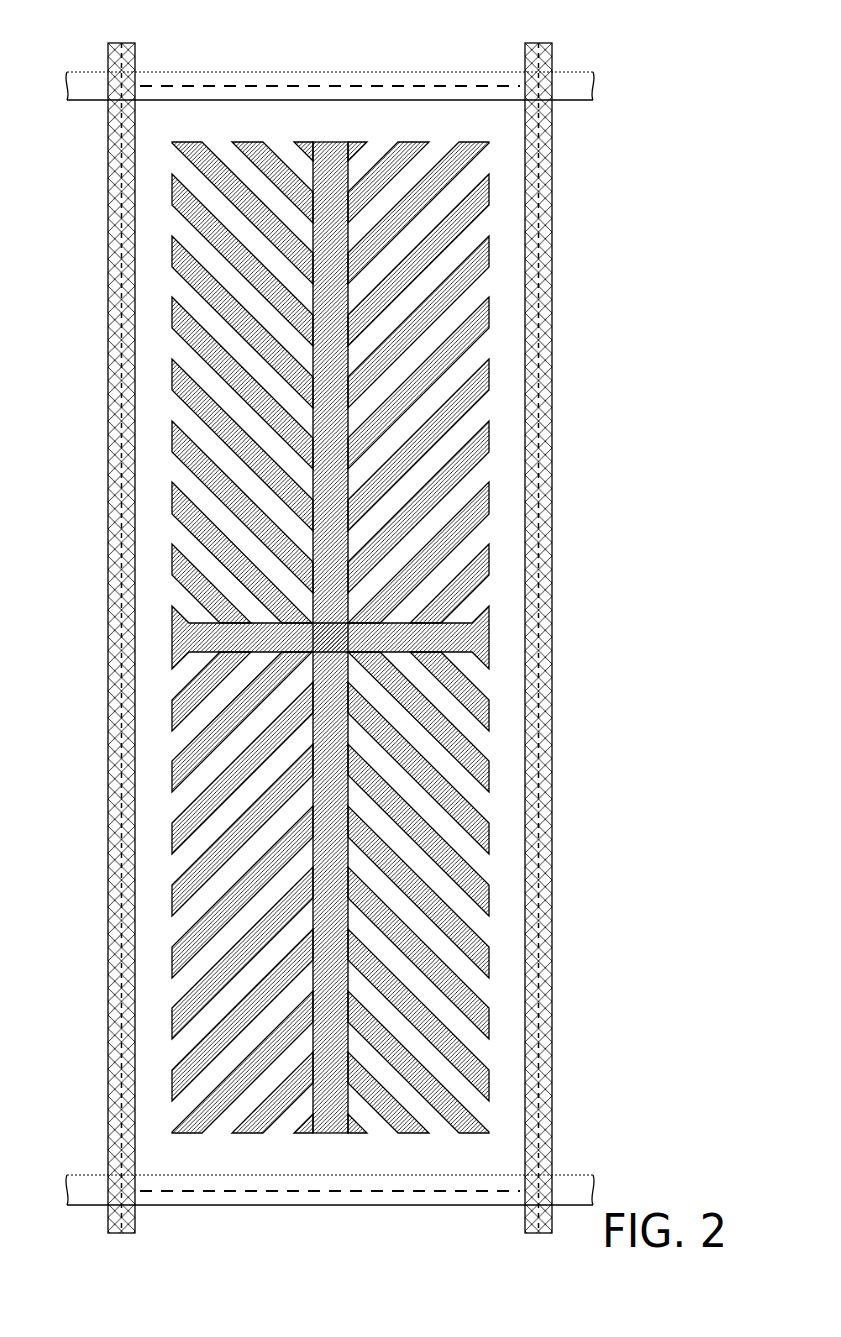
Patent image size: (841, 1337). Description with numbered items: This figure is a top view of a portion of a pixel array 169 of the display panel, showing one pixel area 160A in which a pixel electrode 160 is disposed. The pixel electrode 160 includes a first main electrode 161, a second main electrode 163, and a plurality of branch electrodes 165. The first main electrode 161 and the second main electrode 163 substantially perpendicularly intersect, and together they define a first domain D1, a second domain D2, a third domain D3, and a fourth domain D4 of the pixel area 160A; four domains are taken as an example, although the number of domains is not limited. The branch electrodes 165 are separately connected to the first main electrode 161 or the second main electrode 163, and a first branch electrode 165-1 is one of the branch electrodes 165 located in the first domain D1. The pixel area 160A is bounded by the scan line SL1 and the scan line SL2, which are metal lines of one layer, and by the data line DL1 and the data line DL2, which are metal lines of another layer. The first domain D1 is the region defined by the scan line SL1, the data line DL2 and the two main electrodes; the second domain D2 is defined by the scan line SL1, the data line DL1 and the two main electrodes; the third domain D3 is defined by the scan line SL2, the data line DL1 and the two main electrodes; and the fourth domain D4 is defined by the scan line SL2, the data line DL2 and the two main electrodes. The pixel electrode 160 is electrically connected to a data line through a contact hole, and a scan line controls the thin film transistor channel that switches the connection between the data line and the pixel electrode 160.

The pixel array 169 is at (162, 33).
The pixel electrode 160 is at (474, 152).
The pixel area 160A is at (289, 80).
The second main electrode 163 is at (326, 142).
The first main electrode 161 is at (172, 642).
The branch electrodes 165 is at (172, 855).
The first branch electrode 165-1 is at (490, 365).
The scan line SL1 is at (444, 72).
The scan line SL2 is at (445, 1205).
The data line DL1 is at (113, 563).
The data line DL2 is at (550, 632).
The first domain D1 is at (474, 294).
The second domain D2 is at (188, 296).
The third domain D3 is at (188, 920).
The fourth domain D4 is at (474, 920).